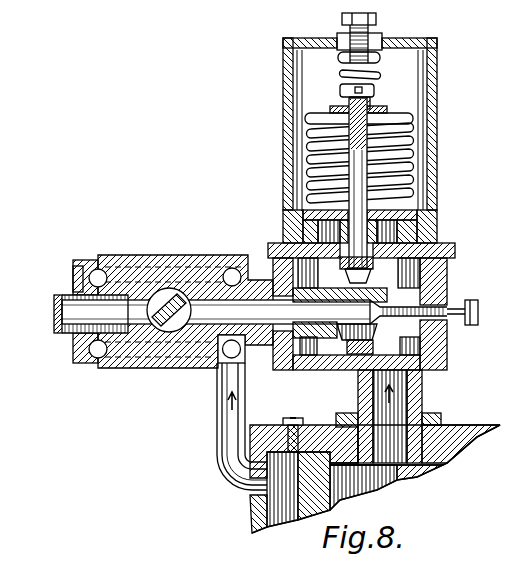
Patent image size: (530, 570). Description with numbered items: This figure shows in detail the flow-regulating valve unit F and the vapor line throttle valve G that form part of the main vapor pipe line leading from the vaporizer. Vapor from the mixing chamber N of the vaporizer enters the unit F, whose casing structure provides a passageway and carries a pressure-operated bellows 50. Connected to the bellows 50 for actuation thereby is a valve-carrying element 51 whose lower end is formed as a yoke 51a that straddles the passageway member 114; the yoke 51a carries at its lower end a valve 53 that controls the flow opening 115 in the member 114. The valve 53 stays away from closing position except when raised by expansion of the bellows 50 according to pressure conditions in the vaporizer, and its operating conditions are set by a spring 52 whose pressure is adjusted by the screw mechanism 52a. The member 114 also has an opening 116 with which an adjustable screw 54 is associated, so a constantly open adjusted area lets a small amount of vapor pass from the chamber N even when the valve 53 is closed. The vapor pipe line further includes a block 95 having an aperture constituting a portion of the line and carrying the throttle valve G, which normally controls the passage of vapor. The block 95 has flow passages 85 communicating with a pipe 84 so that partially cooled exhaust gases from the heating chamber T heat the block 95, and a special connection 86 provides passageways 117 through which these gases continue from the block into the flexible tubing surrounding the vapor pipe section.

The screw mechanism 52a is at (378, 22).
The flow-regulating valve unit F is at (437, 84).
The spring 52 is at (381, 75).
The pressure-operated bellows 50 is at (413, 117).
The valve-carrying element 51 is at (400, 185).
The yoke 51a is at (371, 279).
The passageway member 114 is at (380, 288).
The opening 116 is at (380, 300).
The flow opening 115 is at (378, 331).
The valve 53 is at (360, 362).
The adjustable screw 54 is at (477, 321).
The special connection 86 is at (74, 260).
The vapor line throttle valve G is at (143, 258).
The flow passages 85 is at (232, 268).
The passageways 117 is at (73, 272).
The block 95 is at (147, 369).
The pipe 84 is at (218, 412).
The heating chamber T is at (267, 500).
The mixing chamber N is at (405, 478).